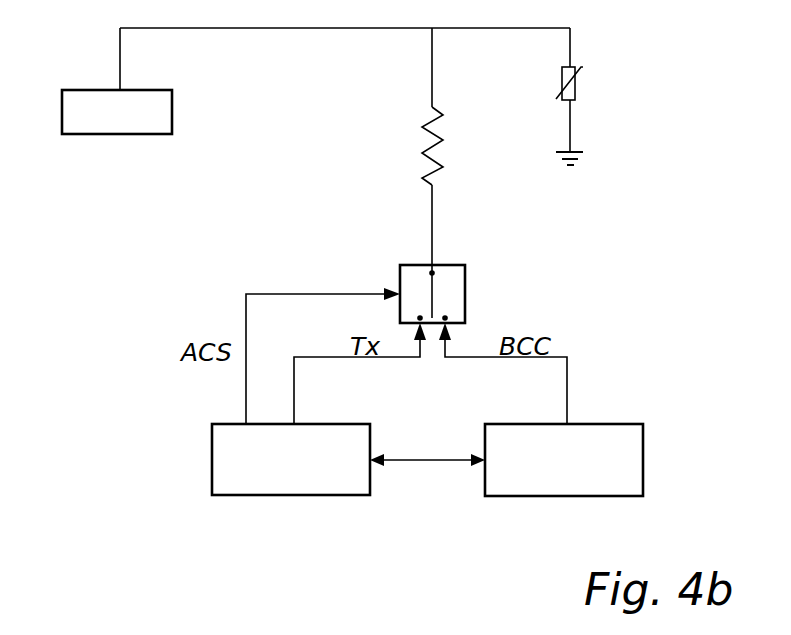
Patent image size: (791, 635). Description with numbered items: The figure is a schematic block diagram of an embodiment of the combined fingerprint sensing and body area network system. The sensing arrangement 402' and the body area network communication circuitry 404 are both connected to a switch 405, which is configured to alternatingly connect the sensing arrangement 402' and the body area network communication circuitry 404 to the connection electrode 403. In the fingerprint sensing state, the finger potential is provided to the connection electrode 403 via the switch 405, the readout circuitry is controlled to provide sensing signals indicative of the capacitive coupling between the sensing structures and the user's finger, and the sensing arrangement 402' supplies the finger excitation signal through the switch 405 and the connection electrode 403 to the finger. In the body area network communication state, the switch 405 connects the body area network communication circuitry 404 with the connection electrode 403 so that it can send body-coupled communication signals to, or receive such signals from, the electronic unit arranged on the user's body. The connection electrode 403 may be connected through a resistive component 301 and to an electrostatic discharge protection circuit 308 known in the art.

The connection electrode 403 is at (81, 90).
The electrostatic discharge protection circuit 308 is at (562, 78).
The resistor 301 is at (422, 153).
The switch 405 is at (513, 271).
The sensing arrangement 402' is at (291, 497).
The body area network communication circuitry 404 is at (563, 497).